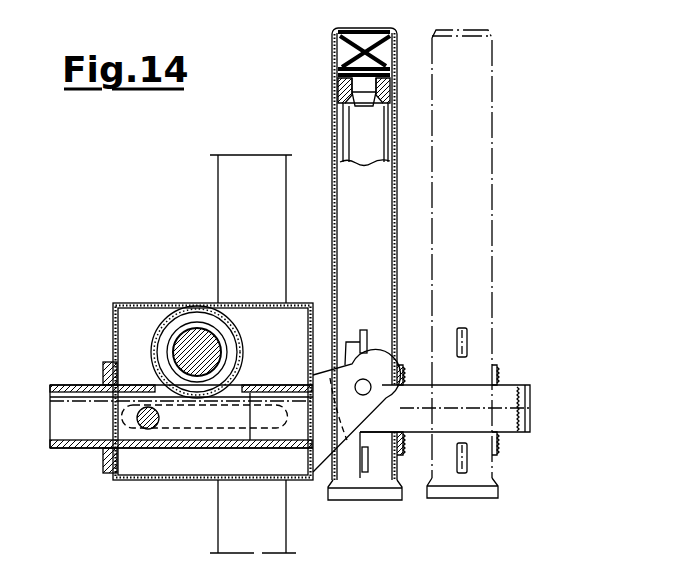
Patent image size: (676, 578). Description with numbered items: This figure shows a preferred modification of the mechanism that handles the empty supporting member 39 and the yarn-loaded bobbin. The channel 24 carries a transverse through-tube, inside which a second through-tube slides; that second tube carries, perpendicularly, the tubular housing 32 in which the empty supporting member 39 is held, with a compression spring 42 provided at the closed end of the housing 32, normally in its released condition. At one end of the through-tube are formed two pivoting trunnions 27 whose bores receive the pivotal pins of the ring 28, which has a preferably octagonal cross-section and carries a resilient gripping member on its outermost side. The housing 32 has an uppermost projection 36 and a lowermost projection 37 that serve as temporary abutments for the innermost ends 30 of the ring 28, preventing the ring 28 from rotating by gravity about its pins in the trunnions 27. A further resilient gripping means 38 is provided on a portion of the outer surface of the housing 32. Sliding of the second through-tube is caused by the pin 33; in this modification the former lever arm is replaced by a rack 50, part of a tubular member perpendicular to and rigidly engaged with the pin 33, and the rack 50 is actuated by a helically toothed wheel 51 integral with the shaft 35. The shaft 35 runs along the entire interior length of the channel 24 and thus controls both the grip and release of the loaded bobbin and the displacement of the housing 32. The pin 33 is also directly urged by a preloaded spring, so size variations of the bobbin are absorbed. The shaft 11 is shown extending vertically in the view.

The shaft 11 is at (232, 217).
The channel 24 is at (112, 315).
The pivoting trunnions 27 is at (340, 385).
The ring 28 is at (508, 388).
The innermost ends 30 is at (355, 447).
The tubular housing 32 is at (333, 124).
The pin 33 is at (148, 430).
The shaft 35 is at (215, 341).
The uppermost projection 36 is at (369, 330).
The lowermost projection 37 is at (368, 466).
The resilient gripping means 38 is at (402, 372).
The empty supporting member 39 is at (345, 143).
The compression spring 42 is at (347, 66).
The rack 50 is at (79, 400).
The helically toothed wheel 51 is at (167, 307).